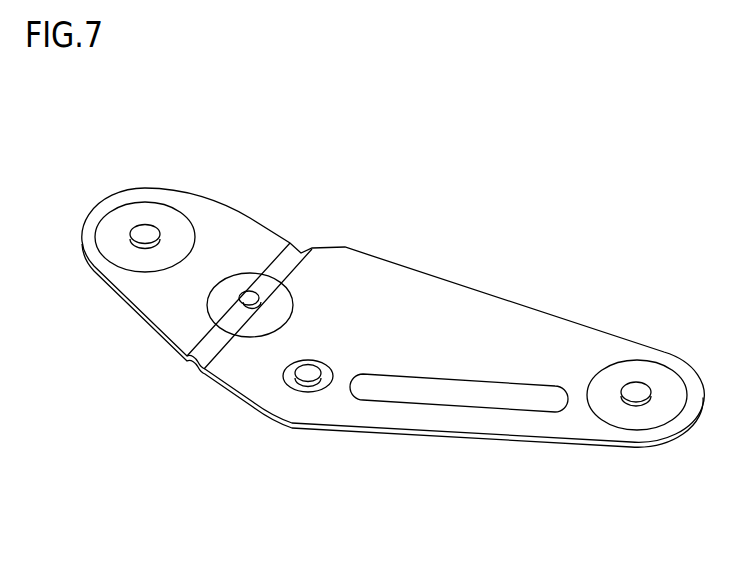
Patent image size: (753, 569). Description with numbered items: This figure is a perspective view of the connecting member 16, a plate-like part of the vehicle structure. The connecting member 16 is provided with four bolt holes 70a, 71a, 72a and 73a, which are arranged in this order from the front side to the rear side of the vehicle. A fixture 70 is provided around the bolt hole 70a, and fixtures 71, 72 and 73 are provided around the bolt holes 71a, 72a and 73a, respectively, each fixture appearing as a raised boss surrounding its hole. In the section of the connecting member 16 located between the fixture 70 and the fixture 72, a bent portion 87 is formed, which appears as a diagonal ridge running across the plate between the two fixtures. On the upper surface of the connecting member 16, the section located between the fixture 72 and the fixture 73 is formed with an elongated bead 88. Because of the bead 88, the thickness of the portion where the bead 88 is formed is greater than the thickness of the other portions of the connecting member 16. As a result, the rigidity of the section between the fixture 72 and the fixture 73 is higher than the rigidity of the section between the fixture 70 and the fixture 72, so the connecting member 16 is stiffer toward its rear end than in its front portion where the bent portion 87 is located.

The connecting member 16 is at (461, 167).
The fixture 70 is at (183, 226).
The bolt hole 70a is at (143, 225).
The fixture 71 is at (288, 289).
The bolt hole 71a is at (247, 292).
The fixture 72 is at (332, 379).
The bolt hole 72a is at (300, 381).
The fixture 73 is at (675, 385).
The bolt hole 73a is at (630, 383).
The bent portion 87 is at (193, 362).
The bead 88 is at (533, 393).